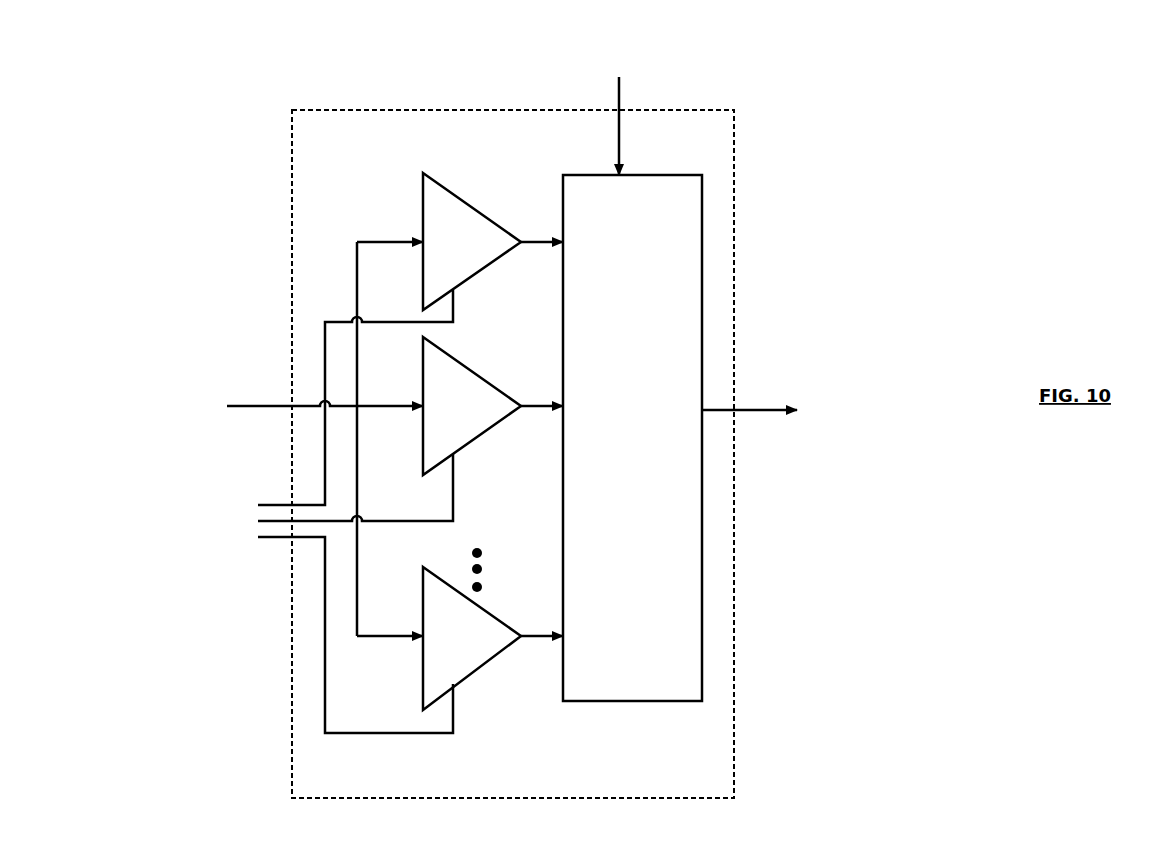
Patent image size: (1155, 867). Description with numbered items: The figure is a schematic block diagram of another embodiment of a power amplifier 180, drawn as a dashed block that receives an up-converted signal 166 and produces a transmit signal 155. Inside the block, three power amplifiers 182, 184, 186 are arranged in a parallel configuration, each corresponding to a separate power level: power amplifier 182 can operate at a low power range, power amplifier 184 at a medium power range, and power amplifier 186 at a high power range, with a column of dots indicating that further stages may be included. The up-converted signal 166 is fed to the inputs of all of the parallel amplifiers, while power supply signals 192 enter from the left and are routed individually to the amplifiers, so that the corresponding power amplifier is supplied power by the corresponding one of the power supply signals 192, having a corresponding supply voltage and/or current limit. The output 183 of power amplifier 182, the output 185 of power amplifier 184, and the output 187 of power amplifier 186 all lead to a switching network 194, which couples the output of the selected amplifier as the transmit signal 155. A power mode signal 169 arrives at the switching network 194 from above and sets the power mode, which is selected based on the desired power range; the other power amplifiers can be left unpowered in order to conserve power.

The transmit signal 155 is at (807, 404).
The up-converted signal 166 is at (245, 439).
The power mode signal 169 is at (631, 98).
The power amplifier 180 is at (513, 454).
The power amplifier 182 is at (472, 241).
The output 183 is at (538, 238).
The power amplifier 184 is at (472, 406).
The output 185 is at (538, 402).
The power amplifier 186 is at (472, 638).
The output 187 is at (538, 632).
The power supply signals 192 is at (289, 511).
The switching network 194 is at (632, 438).